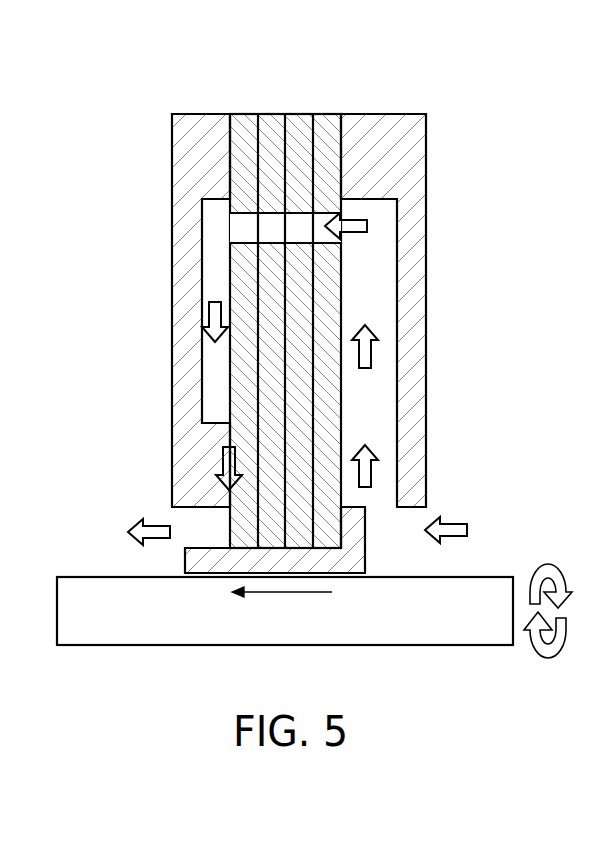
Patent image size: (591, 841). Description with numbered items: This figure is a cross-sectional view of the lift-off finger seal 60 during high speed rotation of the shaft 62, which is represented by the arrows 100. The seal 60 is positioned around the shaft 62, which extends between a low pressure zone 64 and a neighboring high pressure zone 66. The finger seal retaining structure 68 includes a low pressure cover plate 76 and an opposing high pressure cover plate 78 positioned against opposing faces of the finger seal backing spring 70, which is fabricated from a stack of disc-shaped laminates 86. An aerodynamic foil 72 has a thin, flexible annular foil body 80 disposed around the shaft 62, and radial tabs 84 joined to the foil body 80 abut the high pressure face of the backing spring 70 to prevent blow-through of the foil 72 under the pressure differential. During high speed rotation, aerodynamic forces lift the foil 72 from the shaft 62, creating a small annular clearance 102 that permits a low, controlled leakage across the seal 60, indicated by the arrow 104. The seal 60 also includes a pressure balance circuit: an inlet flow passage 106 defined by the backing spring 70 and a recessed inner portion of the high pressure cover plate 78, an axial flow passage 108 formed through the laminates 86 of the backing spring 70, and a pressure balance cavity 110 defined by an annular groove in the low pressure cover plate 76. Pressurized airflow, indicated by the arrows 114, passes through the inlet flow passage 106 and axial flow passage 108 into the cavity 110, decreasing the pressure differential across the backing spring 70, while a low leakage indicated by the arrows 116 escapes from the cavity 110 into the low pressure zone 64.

The lift-off finger seal 60 is at (142, 90).
The shaft 62 is at (278, 646).
The low pressure zone 64 is at (146, 276).
The high pressure zone 66 is at (499, 276).
The finger seal retaining structure 68 is at (398, 118).
The finger seal backing spring 70 is at (325, 118).
The aerodynamic foil 72 is at (188, 572).
The low pressure cover plate 76 is at (181, 157).
The high pressure cover plate 78 is at (416, 146).
The annular foil body 80 is at (220, 575).
The radial tabs 84 is at (367, 548).
The laminates 86 is at (241, 116).
The arrows 100 is at (548, 563).
The annular clearance 102 is at (360, 577).
The arrow 104 is at (300, 594).
The inlet flow passage 106 is at (383, 296).
The axial flow passage 108 is at (240, 231).
The pressure balance cavity 110 is at (213, 392).
The arrows 114 is at (211, 318).
The arrows 116 is at (222, 460).